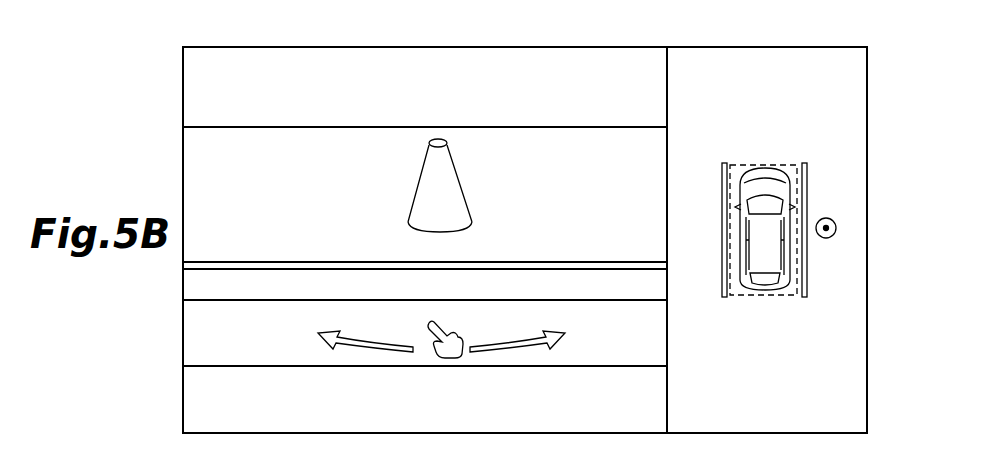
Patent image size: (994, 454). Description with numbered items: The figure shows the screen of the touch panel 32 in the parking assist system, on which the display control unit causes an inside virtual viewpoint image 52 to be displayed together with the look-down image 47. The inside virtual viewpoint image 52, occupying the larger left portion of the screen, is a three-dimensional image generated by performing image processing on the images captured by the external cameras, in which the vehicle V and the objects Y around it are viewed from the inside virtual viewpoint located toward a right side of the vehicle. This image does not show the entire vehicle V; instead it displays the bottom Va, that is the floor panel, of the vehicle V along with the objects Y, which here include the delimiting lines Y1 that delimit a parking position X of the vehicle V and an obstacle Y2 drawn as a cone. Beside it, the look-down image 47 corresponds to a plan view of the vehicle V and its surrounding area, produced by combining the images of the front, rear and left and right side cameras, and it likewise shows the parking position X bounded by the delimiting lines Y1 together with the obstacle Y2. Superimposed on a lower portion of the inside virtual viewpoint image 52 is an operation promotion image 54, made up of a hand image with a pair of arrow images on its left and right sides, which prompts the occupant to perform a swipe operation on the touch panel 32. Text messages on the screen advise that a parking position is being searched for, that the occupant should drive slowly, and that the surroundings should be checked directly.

The touch panel 32 is at (822, 395).
The look-down image 47 is at (848, 62).
The inside virtual viewpoint image 52 is at (222, 162).
The operation promotion image 54 is at (570, 336).
The parking position X is at (738, 165).
The vehicle V is at (572, 298).
The objects Y is at (503, 258).
The delimiting lines Y1 is at (324, 262).
The obstacle Y2 is at (422, 168).
The bottom Va is at (260, 320).